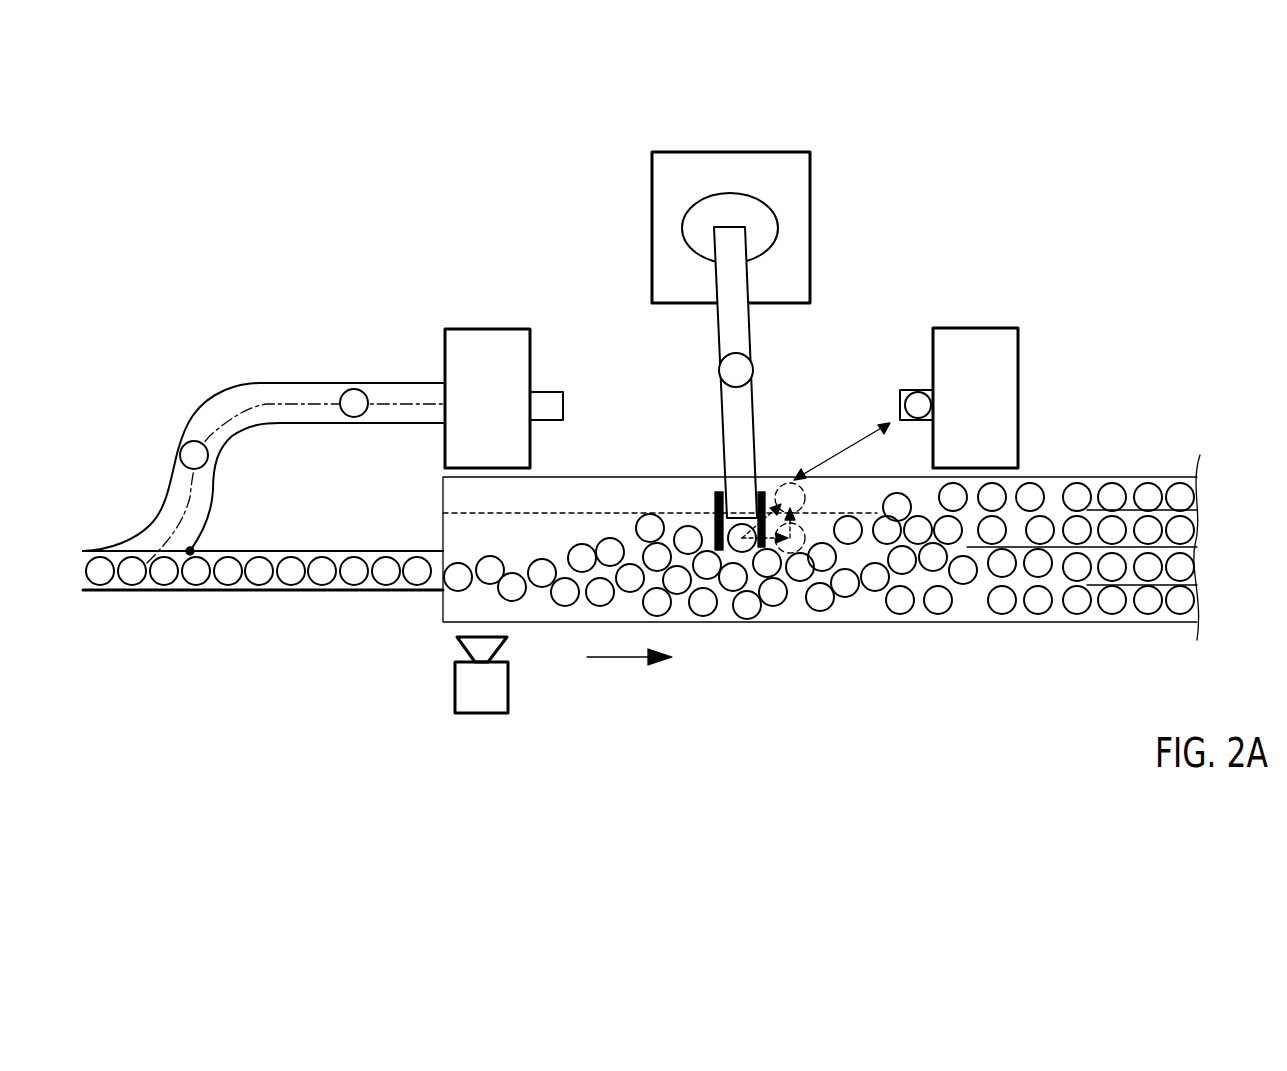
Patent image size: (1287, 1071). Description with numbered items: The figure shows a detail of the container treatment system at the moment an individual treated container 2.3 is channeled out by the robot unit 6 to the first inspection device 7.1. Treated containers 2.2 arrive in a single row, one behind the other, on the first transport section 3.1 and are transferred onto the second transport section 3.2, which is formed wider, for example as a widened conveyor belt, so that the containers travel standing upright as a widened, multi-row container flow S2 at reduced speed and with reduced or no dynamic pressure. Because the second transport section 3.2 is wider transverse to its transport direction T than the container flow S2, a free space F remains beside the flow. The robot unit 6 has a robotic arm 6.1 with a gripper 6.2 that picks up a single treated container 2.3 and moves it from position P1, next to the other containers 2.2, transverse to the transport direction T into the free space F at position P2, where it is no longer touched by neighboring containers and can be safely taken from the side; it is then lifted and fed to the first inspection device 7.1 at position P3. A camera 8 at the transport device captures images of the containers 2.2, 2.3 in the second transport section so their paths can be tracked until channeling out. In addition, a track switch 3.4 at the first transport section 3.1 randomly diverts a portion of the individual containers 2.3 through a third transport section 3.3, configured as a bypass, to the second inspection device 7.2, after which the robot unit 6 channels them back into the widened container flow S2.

The treated containers 2.2 is at (354, 578).
The individual treated container 2.3 is at (354, 397).
The first transport section 3.1 is at (253, 606).
The second transport section 3.2 is at (755, 645).
The third transport section 3.3 is at (260, 381).
The track switch 3.4 is at (143, 547).
The robot unit 6 is at (784, 136).
The robotic arm 6.1 is at (742, 341).
The gripper 6.2 is at (763, 481).
The first inspection device 7.1 is at (1007, 413).
The second inspection device 7.2 is at (502, 338).
The camera 8 is at (463, 688).
The free space F is at (687, 493).
The position P1 is at (793, 550).
The position P2 is at (797, 474).
The position P3 is at (917, 390).
The widened container flow S2 is at (582, 605).
The transport direction T is at (614, 660).